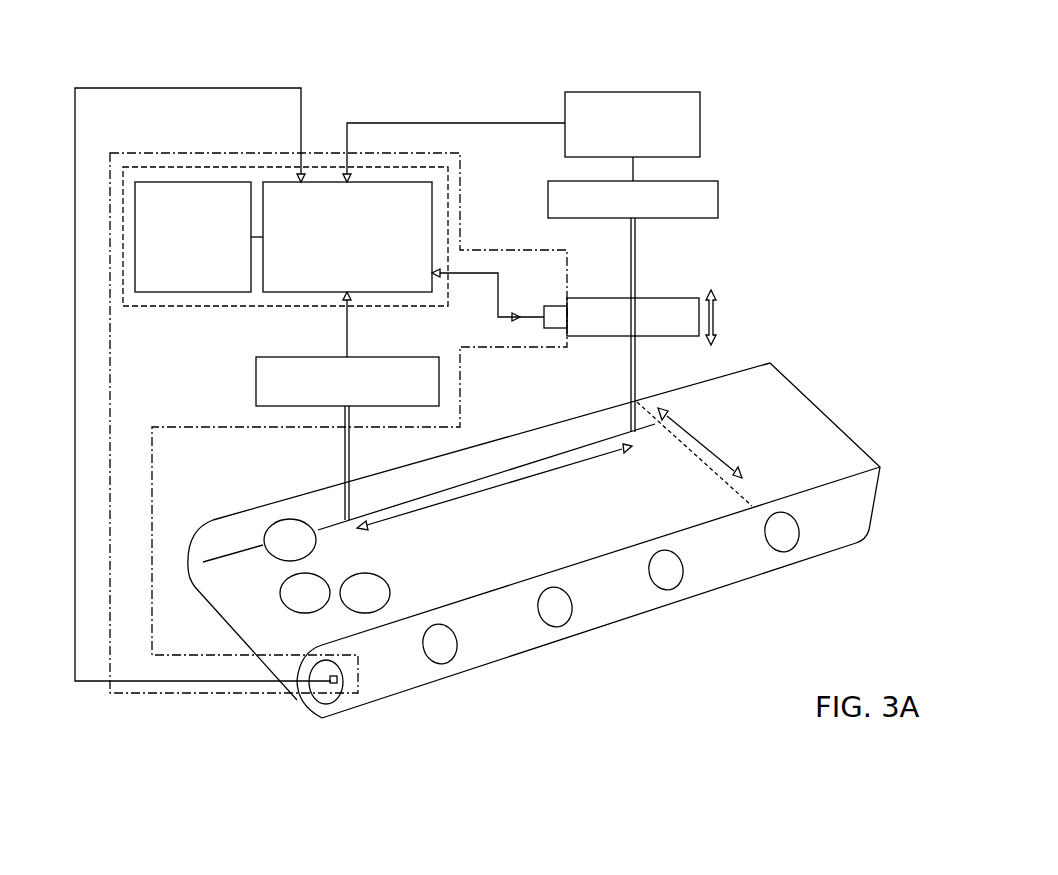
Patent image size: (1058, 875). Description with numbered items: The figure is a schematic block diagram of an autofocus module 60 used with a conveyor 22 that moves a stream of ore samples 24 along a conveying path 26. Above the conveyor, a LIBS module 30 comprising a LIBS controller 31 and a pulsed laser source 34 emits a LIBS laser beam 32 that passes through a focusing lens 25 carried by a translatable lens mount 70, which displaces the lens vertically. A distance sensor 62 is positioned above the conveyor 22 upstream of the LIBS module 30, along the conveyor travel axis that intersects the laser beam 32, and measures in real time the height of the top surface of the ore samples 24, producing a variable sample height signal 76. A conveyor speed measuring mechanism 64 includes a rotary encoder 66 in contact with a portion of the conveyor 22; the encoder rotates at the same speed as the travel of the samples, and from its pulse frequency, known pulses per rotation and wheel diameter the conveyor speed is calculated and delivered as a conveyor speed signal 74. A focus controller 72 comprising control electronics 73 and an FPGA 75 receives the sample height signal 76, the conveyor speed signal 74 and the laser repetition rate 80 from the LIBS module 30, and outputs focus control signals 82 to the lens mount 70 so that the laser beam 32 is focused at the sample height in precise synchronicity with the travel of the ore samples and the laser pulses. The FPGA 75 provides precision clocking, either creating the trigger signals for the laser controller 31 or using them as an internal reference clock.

The conveyor 22 is at (697, 594).
The ore samples 24 is at (310, 592).
The focusing lens 25 is at (660, 337).
The conveying path 26 is at (642, 514).
The LIBS module 30 is at (632, 56).
The LIBS controller 31 is at (700, 113).
The LIBS laser beam 32 is at (630, 372).
The pulsed laser source 34 is at (718, 200).
The autofocus module 60 is at (110, 338).
The distance sensor 62 is at (256, 380).
The conveyor speed measuring mechanism 64 is at (370, 715).
The rotary encoder 66 is at (336, 686).
The translatable lens mount 70 is at (555, 330).
The focus controller 72 is at (238, 167).
The control electronics 73 is at (432, 190).
The conveyor speed signal 74 is at (75, 400).
The FPGA 75 is at (176, 181).
The variable sample height signal 76 is at (350, 331).
The laser repetition rate 80 is at (467, 123).
The focus control signals 82 is at (498, 283).